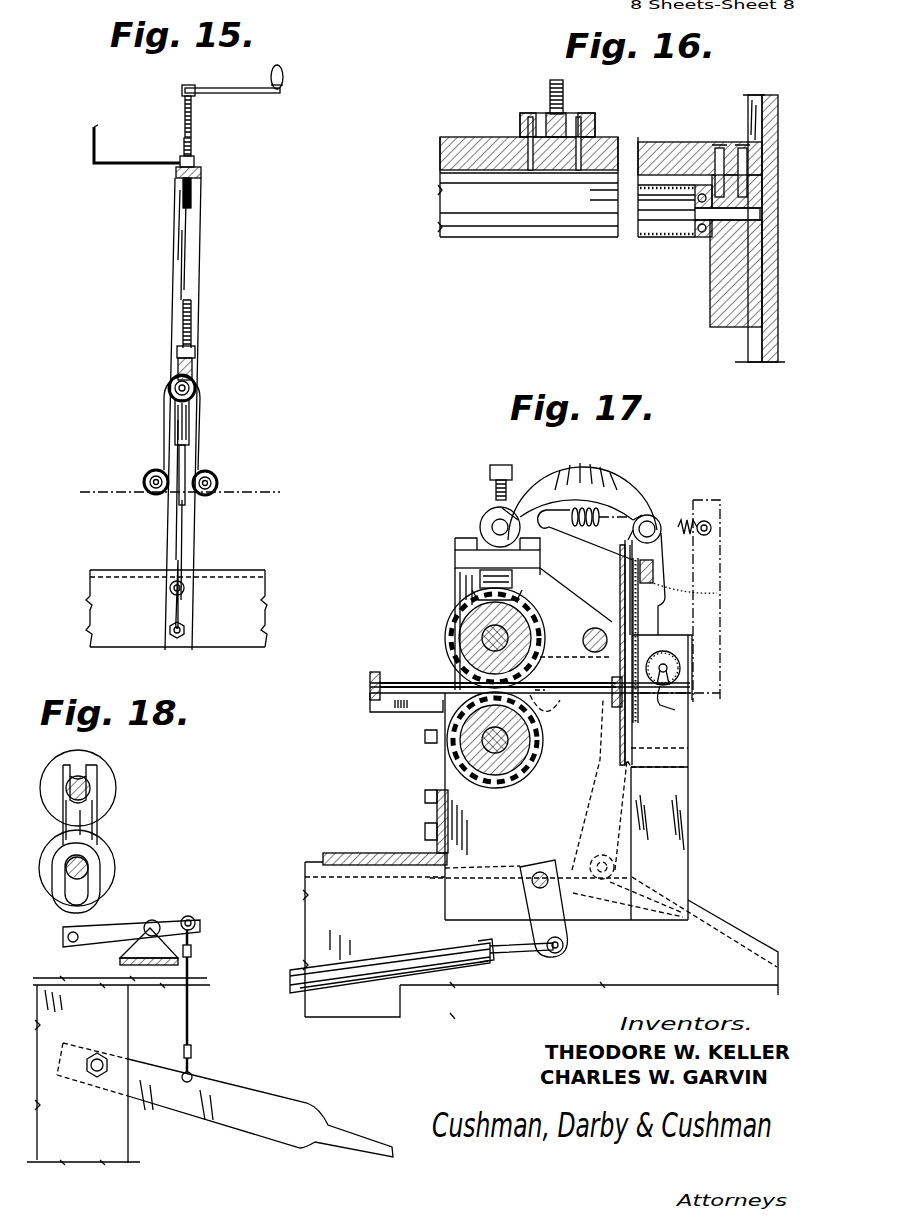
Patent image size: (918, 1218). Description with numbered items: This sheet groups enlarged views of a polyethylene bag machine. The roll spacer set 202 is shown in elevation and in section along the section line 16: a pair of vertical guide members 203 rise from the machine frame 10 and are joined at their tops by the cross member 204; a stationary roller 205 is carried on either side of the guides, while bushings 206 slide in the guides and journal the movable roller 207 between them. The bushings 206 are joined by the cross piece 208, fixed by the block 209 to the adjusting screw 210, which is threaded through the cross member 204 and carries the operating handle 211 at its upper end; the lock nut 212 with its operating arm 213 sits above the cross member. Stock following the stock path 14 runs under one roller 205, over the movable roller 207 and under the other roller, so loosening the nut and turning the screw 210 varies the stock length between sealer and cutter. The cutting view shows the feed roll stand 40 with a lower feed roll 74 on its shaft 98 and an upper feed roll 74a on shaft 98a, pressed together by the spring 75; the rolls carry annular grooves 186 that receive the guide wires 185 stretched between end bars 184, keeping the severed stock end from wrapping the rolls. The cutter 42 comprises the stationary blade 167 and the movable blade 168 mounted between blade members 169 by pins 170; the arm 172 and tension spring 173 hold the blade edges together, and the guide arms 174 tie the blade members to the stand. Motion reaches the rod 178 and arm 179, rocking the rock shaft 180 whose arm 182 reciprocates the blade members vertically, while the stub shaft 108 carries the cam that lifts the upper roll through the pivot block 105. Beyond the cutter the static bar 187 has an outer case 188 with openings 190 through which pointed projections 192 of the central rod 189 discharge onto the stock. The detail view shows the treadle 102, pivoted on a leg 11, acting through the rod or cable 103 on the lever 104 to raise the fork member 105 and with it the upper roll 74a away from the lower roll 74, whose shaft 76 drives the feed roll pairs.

In FIG. 15, the roll spacer set 202 is at (162, 110).
In FIG. 15, the operating handle 211 is at (253, 97).
In FIG. 15, the lock nut 212 is at (195, 160).
In FIG. 15, the operating arm 213 is at (160, 163).
In FIG. 15, the cross member 204 is at (201, 173).
In FIG. 15, the vertical guide members 203 is at (193, 268).
In FIG. 16, the vertical guide members 203 is at (770, 293).
In FIG. 15, the section line 16 is at (190, 278).
In FIG. 15, the adjusting screw 210 is at (190, 322).
In FIG. 16, the adjusting screw 210 is at (565, 96).
In FIG. 15, the block 209 is at (178, 348).
In FIG. 16, the block 209 is at (598, 126).
In FIG. 15, the cross piece 208 is at (190, 357).
In FIG. 16, the cross piece 208 is at (440, 156).
In FIG. 15, the movable roller 207 is at (200, 381).
In FIG. 16, the movable roller 207 is at (530, 232).
In FIG. 15, the bushings 206 is at (188, 410).
In FIG. 16, the bushings 206 is at (710, 293).
In FIG. 15, the stationary roller 205 is at (145, 478).
In FIG. 15, the track 14 is at (270, 492).
In FIG. 17, the track 14 is at (338, 684).
In FIG. 15, the base frame 10 is at (265, 613).
In FIG. 17, the base frame 10 is at (695, 941).
In FIG. 17, the guide arms 174 is at (608, 482).
In FIG. 17, the cutter mechanism 42 is at (668, 484).
In FIG. 17, the feed roll stand 40 is at (440, 546).
In FIG. 17, the springs 75 is at (478, 586).
In FIG. 17, the upper feed roll 74a is at (448, 630).
In FIG. 18, the upper feed roll 74a is at (120, 779).
In FIG. 17, the upper feed roll shaft 98a is at (483, 638).
In FIG. 17, the guide rods or wires 185 is at (429, 668).
In FIG. 17, the outwardly extending arm 172 is at (602, 552).
In FIG. 17, the stub shaft 108 is at (598, 628).
In FIG. 17, the tension spring 173 is at (697, 521).
In FIG. 17, the blade members 169 is at (653, 573).
In FIG. 17, the pins 170 is at (717, 594).
In FIG. 17, the movable blade 168 is at (637, 626).
In FIG. 17, the static bar 187 is at (706, 645).
In FIG. 17, the outer case 188 is at (680, 661).
In FIG. 17, the central rod 189 is at (667, 668).
In FIG. 17, the openings 190 is at (668, 686).
In FIG. 17, the pointed projections 192 is at (665, 695).
In FIG. 17, the stationary blade 167 is at (632, 724).
In FIG. 17, the end bars 184 is at (375, 702).
In FIG. 17, the annular grooves 186 is at (440, 706).
In FIG. 17, the fork member 105 is at (530, 716).
In FIG. 18, the fork member 105 is at (95, 831).
In FIG. 17, the feed rolls 74 is at (447, 741).
In FIG. 18, the feed rolls 74 is at (115, 861).
In FIG. 17, the lower roller shaft 98 is at (483, 745).
In FIG. 17, the arm 182 is at (578, 852).
In FIG. 17, the rock shaft 180 is at (538, 870).
In FIG. 17, the rod 178 is at (385, 966).
In FIG. 17, the arm 179 is at (570, 925).
In FIG. 18, the shaft 76 is at (88, 874).
In FIG. 18, the lever 104 is at (120, 920).
In FIG. 18, the rod or cable 103 is at (191, 1022).
In FIG. 18, the treadle 102 is at (240, 1088).
In FIG. 18, the legs 11 is at (115, 1145).